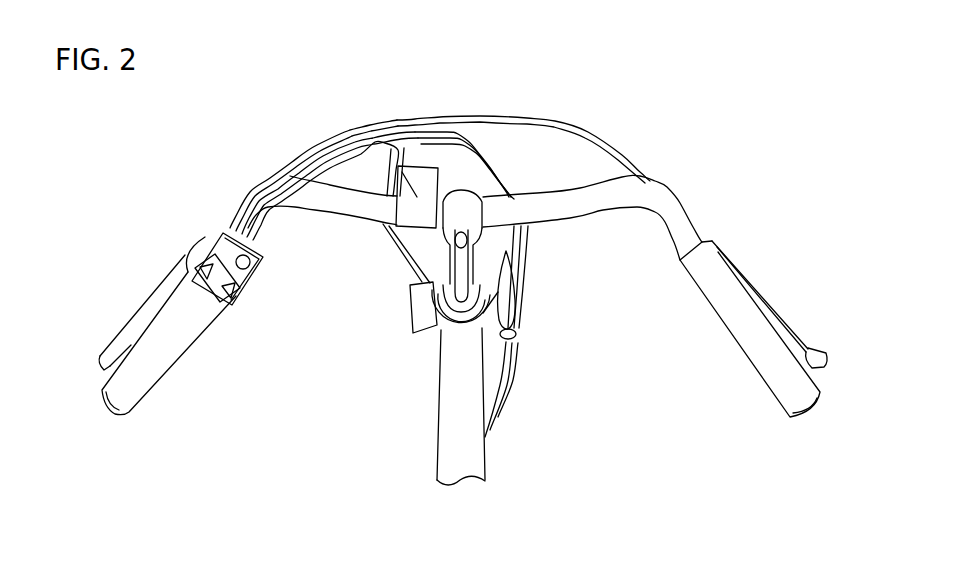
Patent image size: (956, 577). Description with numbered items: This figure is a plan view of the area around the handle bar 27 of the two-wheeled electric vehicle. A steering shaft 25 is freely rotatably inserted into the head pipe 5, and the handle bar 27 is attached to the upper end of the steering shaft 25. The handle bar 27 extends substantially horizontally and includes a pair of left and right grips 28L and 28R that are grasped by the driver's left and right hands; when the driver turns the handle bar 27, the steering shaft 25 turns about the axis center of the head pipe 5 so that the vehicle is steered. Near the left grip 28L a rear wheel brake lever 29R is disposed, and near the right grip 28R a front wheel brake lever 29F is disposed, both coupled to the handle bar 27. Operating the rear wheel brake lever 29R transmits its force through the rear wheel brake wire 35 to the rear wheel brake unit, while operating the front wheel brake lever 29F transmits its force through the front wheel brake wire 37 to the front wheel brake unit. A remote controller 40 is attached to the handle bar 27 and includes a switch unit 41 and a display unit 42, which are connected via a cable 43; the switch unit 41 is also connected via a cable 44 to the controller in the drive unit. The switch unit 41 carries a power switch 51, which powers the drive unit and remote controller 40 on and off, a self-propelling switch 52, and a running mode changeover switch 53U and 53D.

The head pipe 5 is at (438, 397).
The steering shaft 25 is at (411, 303).
The handle bar 27 is at (579, 210).
The left grip 28L is at (120, 402).
The right grip 28R is at (798, 411).
The rear wheel brake lever 29R is at (104, 347).
The front wheel brake lever 29F is at (818, 351).
The rear wheel brake wire 35 is at (383, 127).
The front wheel brake wire 37 is at (523, 118).
The remote controller 40 is at (335, 95).
The switch unit 41 is at (223, 228).
The display unit 42 is at (343, 180).
The cable 43 is at (402, 158).
The cable 44 is at (527, 285).
The power switch 51 is at (251, 259).
The self-propelling switch 52 is at (256, 283).
The running mode changeover switch 53U is at (194, 270).
The running mode changeover switch 53D is at (227, 308).